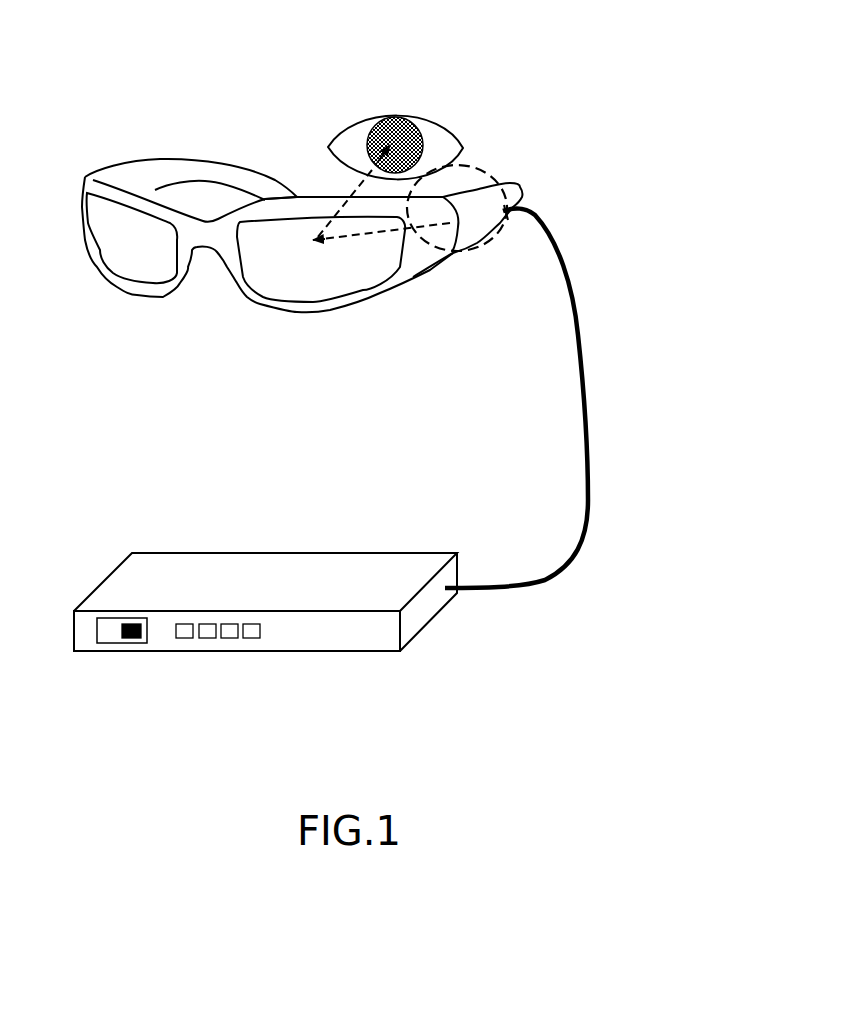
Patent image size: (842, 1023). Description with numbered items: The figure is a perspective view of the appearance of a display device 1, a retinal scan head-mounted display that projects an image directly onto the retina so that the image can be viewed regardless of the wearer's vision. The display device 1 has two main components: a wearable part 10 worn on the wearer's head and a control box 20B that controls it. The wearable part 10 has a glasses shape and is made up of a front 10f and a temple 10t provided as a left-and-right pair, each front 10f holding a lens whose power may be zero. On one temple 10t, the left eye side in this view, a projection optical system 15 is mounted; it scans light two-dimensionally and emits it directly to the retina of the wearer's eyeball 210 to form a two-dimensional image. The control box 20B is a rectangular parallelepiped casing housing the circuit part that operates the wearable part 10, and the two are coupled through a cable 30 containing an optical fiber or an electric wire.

The display device 1 is at (64, 40).
The wearable part 10 is at (78, 165).
The temple 10t is at (150, 160).
The front 10f is at (140, 295).
The eyeball 210 is at (439, 127).
The projection optical system 15 is at (492, 173).
The cable 30 is at (590, 425).
The control box 20B is at (150, 547).